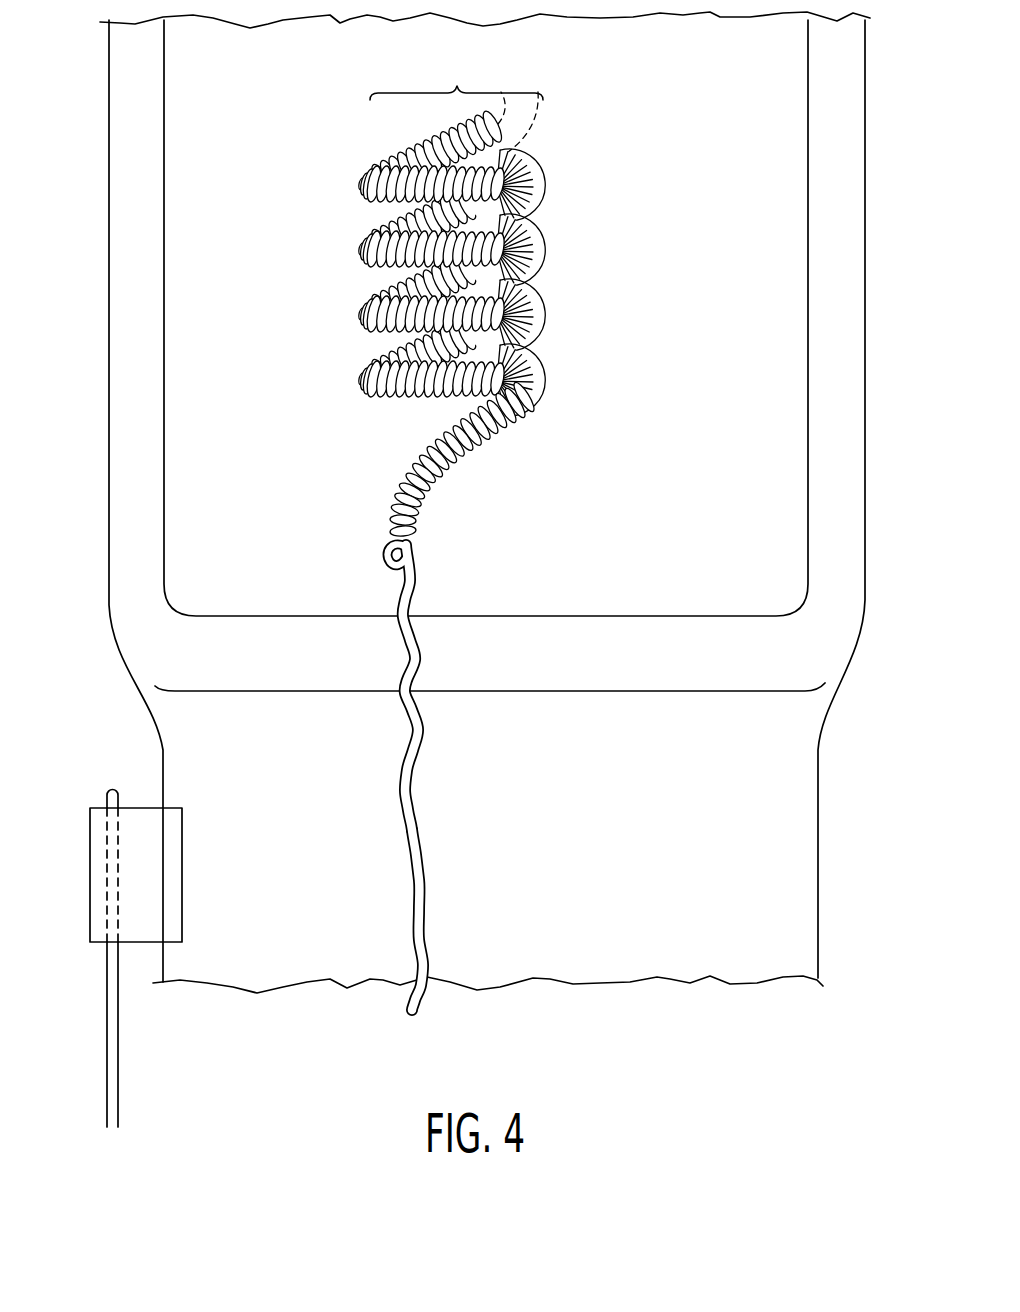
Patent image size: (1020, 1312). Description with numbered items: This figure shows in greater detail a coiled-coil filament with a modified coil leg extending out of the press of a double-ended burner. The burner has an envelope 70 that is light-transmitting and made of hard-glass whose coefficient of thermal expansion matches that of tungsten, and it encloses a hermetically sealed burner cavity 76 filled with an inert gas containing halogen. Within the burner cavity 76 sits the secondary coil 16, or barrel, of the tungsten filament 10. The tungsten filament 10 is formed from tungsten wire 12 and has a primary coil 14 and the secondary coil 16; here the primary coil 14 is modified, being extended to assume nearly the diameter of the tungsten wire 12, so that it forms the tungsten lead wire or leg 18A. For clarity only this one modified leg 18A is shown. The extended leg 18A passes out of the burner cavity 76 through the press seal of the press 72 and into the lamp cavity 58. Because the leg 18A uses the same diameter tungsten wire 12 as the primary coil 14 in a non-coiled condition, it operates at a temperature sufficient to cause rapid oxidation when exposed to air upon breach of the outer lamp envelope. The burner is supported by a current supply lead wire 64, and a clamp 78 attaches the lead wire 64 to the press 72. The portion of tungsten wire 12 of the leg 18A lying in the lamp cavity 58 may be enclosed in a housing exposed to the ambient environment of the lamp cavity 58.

The tungsten filament 10 is at (321, 333).
The tungsten wire 12 is at (417, 592).
The primary coil 14 is at (465, 455).
The secondary coil 16 is at (450, 237).
The modified leg 18A is at (419, 731).
The lamp cavity 58 is at (92, 378).
The current supply lead wire 64 is at (117, 1058).
The envelope 70 is at (118, 187).
The press 72 is at (773, 812).
The burner cavity 76 is at (265, 563).
The clamp 78 is at (96, 907).